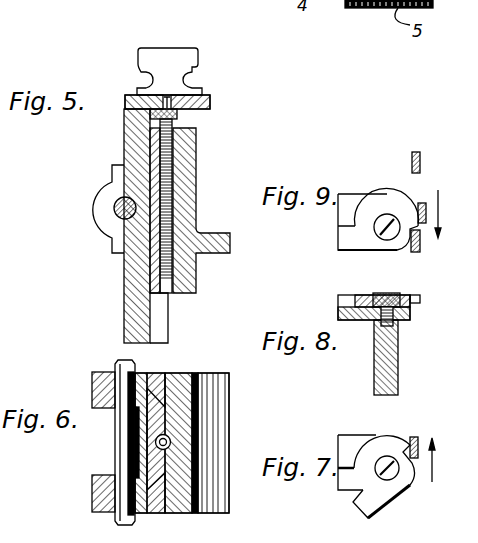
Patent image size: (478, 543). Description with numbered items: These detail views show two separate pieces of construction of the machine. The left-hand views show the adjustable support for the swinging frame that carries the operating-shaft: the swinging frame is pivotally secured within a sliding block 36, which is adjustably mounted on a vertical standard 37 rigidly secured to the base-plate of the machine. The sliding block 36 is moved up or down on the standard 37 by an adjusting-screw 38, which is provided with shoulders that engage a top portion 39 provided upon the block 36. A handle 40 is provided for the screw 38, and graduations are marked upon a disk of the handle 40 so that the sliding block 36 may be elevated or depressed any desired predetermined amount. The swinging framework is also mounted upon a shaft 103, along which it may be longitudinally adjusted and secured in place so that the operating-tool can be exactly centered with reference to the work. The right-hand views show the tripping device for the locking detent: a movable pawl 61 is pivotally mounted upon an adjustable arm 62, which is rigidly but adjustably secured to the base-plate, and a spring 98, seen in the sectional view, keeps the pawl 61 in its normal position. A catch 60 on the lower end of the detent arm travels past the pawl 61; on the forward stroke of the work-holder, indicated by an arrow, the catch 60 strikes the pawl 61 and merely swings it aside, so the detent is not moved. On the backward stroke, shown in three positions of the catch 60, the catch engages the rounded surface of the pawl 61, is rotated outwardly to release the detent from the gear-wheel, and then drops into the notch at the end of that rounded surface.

In FIG. 5, the sliding block 36 is at (131, 283).
In FIG. 6, the sliding block 36 is at (92, 378).
In FIG. 5, the vertical standard 37 is at (184, 176).
In FIG. 6, the vertical standard 37 is at (182, 382).
In FIG. 5, the adjusting-screw 38 is at (167, 142).
In FIG. 6, the adjusting-screw 38 is at (171, 442).
In FIG. 5, the top portion 39 is at (135, 104).
In FIG. 5, the handle 40 is at (165, 56).
In FIG. 5, the shaft 103 is at (114, 208).
In FIG. 6, the shaft 103 is at (120, 446).
In FIG. 9, the catch 60 is at (420, 160).
In FIG. 7, the catch 60 is at (418, 438).
In FIG. 9, the pawl 61 is at (385, 202).
In FIG. 8, the pawl 61 is at (399, 296).
In FIG. 7, the pawl 61 is at (385, 450).
In FIG. 8, the adjustable arm 62 is at (398, 365).
In FIG. 8, the spring 98 is at (410, 313).